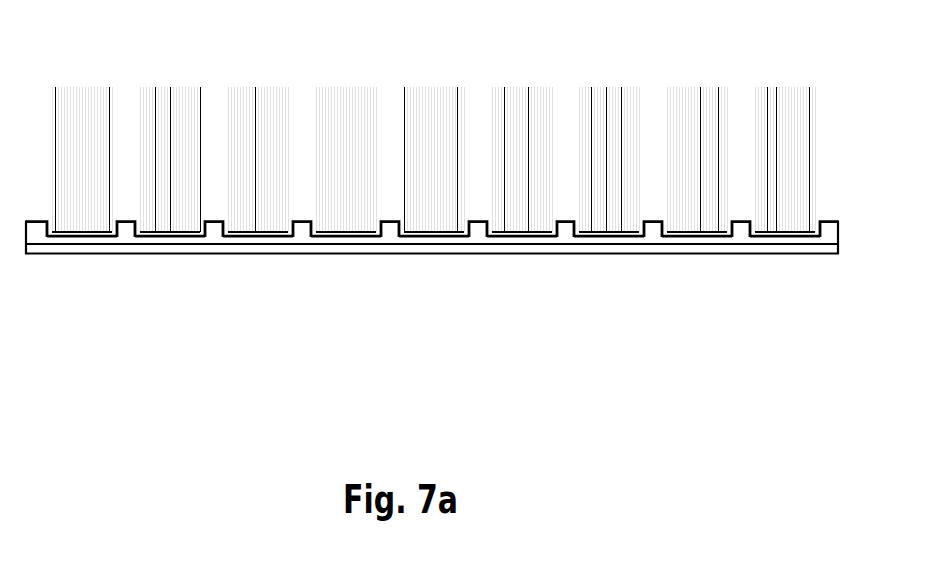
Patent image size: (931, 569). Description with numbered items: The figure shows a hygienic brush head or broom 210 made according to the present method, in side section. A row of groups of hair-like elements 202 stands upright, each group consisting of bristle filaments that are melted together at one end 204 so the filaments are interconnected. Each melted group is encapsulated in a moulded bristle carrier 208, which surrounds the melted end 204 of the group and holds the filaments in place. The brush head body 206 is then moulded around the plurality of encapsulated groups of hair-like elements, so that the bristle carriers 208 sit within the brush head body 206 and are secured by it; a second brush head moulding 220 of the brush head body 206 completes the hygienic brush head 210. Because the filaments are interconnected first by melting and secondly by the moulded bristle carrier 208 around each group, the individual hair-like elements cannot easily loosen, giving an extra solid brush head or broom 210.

The groups of hair-like elements 202 is at (187, 92).
The melted end 204 is at (146, 234).
The brush head body 206 is at (658, 232).
The moulded bristle carrier 208 is at (260, 239).
The hygienic brush head or broom 210 is at (332, 70).
The second brush head moulding 220 is at (386, 247).